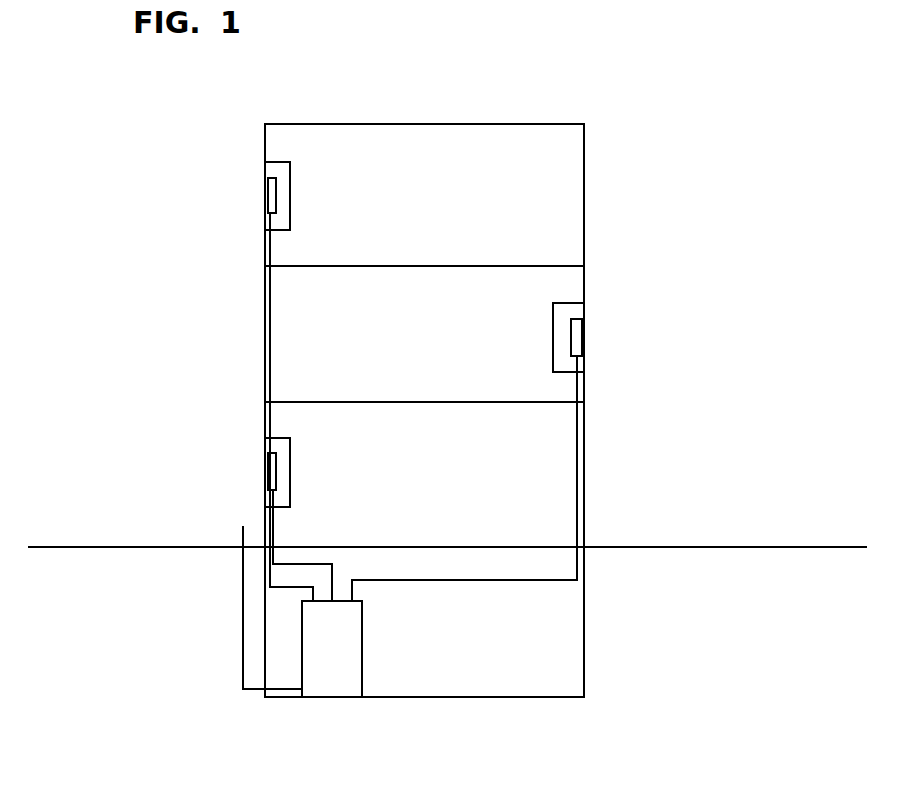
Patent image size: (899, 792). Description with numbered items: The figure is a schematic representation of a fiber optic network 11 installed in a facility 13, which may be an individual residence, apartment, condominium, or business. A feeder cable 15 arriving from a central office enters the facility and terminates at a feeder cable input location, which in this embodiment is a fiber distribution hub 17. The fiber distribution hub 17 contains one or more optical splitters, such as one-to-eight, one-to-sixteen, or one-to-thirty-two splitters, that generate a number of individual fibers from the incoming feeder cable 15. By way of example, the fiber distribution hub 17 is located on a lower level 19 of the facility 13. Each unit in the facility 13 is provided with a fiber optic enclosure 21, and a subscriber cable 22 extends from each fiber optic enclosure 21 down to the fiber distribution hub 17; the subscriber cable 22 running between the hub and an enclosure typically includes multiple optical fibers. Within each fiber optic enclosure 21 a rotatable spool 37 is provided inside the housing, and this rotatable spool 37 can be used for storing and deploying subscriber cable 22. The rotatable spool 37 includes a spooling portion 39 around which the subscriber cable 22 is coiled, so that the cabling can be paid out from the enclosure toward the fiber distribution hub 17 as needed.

The fiber optic network 11 is at (100, 242).
The facility 13 is at (585, 167).
The feeder cable 15 is at (242, 582).
The fiber distribution hub 17 is at (362, 650).
The lower level 19 is at (586, 642).
The fiber optic enclosure 21 is at (305, 207).
The subscriber cable 22 is at (268, 253).
The rotatable spool 37 is at (282, 183).
The spooling portion 39 is at (269, 177).